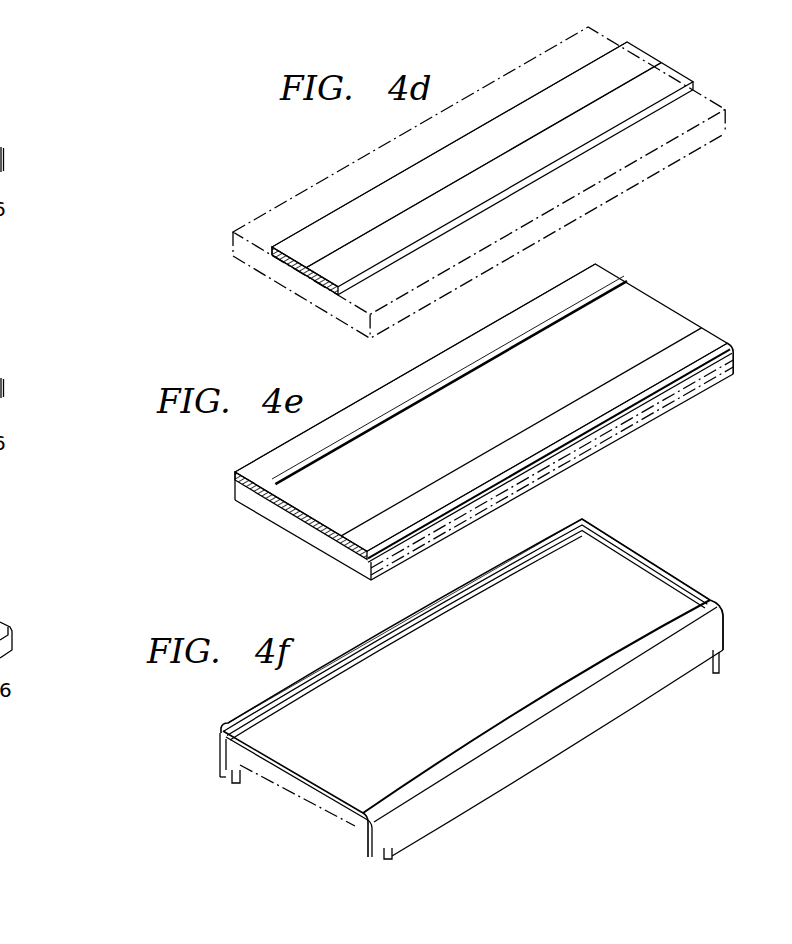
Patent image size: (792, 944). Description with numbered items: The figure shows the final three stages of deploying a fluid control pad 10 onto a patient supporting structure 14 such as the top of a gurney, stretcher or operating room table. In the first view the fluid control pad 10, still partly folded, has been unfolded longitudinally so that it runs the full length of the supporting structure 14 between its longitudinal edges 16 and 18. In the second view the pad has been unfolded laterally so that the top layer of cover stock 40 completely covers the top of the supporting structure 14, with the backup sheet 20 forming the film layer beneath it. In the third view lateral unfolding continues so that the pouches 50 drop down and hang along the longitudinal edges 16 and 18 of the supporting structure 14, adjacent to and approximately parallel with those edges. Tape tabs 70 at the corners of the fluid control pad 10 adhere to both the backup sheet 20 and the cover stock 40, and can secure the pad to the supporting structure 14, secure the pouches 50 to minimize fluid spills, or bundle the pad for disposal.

In FIG. 4D, the fluid control pad 10 is at (679, 62).
In FIG. 4E, the fluid control pad 10 is at (665, 289).
In FIG. 4F, the fluid control pad 10 is at (630, 525).
In FIG. 4D, the patient supporting structure 14 is at (302, 197).
In FIG. 4E, the patient supporting structure 14 is at (252, 498).
In FIG. 4F, the patient supporting structure 14 is at (297, 792).
In FIG. 4D, the longitudinal edge of patient supporting structure 16 is at (647, 160).
In FIG. 4E, the longitudinal edge of patient supporting structure 16 is at (623, 418).
In FIG. 4D, the longitudinal edge of patient supporting structure 18 is at (500, 78).
In FIG. 4E, the longitudinal edge of patient supporting structure 18 is at (237, 472).
In FIG. 4D, the backup sheet 20 is at (370, 247).
In FIG. 4E, the backup sheet 20 is at (618, 391).
In FIG. 4E, the top layer of cover stock 40 is at (633, 293).
In FIG. 4F, the top layer of cover stock 40 is at (663, 590).
In FIG. 4E, the pouch 50 is at (710, 337).
In FIG. 4F, the pouch 50 is at (560, 738).
In FIG. 4F, the tape tab 70 is at (717, 675).